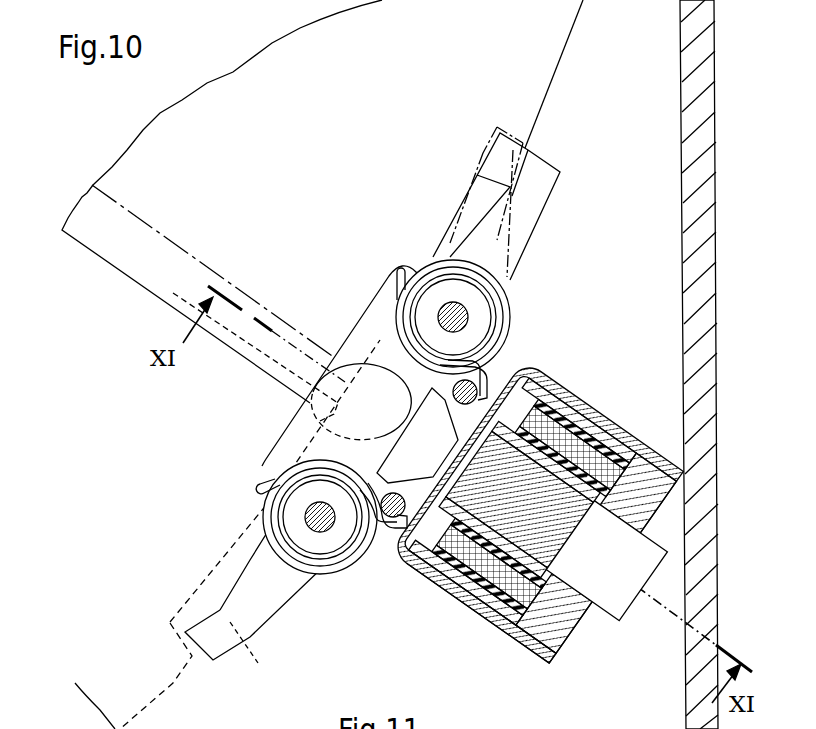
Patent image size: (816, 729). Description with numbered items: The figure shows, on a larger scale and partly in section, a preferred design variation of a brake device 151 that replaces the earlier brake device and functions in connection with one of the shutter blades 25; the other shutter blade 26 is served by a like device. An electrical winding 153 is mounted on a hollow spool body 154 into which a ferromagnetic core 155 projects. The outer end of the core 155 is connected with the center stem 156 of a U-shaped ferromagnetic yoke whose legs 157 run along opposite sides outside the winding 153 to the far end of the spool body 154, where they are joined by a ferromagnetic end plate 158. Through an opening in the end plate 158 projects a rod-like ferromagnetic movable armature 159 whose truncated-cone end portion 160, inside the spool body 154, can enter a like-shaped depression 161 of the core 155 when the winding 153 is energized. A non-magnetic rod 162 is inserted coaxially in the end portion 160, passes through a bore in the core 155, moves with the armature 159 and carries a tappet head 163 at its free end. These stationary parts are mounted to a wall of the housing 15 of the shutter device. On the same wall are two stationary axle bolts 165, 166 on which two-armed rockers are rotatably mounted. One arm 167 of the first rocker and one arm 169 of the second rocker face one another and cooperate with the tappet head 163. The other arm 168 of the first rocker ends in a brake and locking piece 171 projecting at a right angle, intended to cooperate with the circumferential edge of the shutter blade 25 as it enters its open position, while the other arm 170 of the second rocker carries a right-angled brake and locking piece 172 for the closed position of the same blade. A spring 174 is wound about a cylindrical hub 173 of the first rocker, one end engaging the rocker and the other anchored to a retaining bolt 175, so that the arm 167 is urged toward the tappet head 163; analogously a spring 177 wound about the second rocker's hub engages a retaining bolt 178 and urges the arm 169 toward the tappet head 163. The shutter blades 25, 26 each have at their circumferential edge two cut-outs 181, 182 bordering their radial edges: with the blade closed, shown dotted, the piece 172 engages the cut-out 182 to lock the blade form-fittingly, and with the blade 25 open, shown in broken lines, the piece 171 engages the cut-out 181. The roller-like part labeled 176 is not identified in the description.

The housing 15 is at (702, 262).
The shutter blade 25 is at (545, 39).
The shutter blade 26 is at (172, 684).
The brake device 151 is at (544, 508).
The electrical winding 153 is at (531, 507).
The hollow spool body 154 is at (488, 567).
The ferromagnetic core 155 is at (572, 448).
The center stem 156 is at (536, 511).
The legs 157 is at (479, 606).
The end plate 158 is at (554, 614).
The movable armature 159 is at (638, 493).
The end portion 160 is at (606, 561).
The depression 161 is at (519, 499).
The rod 162 is at (523, 501).
The tappet head 163 is at (388, 452).
The axle bolt 165 is at (467, 317).
The axle bolt 166 is at (320, 517).
The arm 167 is at (360, 312).
The arm 168 is at (522, 247).
The arm 169 is at (318, 395).
The arm 170 is at (260, 603).
The brake and locking piece 171 is at (545, 182).
The brake and locking piece 172 is at (260, 656).
The cylindrical hub 173 is at (437, 277).
The spring 174 is at (512, 318).
The retaining bolt 175 is at (503, 373).
The lower roller 176 is at (278, 488).
The spring 177 is at (283, 552).
The retaining bolt 178 is at (387, 520).
The cut-out 181 is at (462, 212).
The cut-out 182 is at (188, 606).